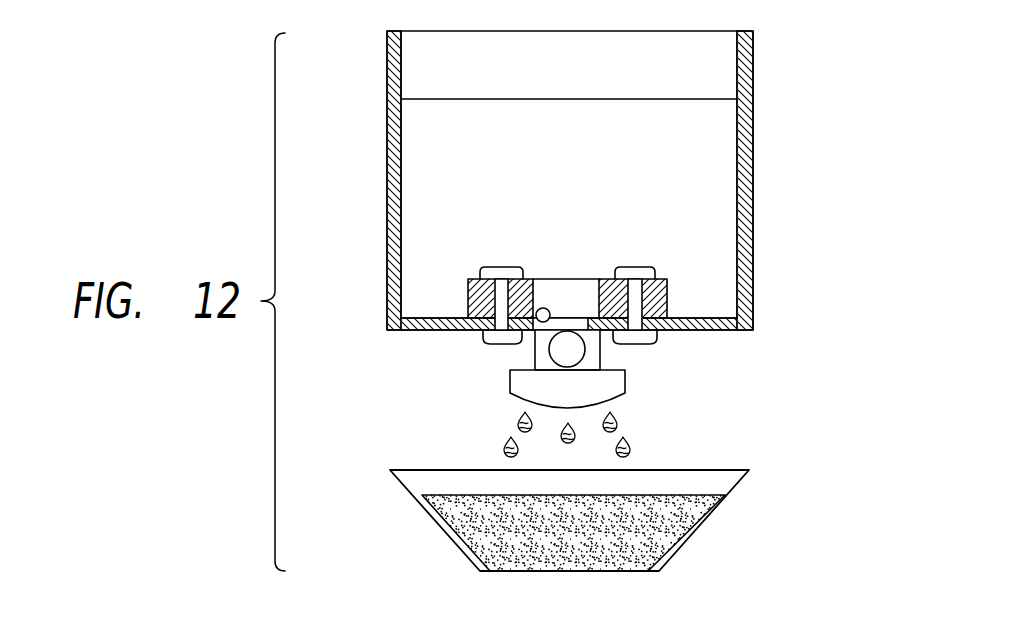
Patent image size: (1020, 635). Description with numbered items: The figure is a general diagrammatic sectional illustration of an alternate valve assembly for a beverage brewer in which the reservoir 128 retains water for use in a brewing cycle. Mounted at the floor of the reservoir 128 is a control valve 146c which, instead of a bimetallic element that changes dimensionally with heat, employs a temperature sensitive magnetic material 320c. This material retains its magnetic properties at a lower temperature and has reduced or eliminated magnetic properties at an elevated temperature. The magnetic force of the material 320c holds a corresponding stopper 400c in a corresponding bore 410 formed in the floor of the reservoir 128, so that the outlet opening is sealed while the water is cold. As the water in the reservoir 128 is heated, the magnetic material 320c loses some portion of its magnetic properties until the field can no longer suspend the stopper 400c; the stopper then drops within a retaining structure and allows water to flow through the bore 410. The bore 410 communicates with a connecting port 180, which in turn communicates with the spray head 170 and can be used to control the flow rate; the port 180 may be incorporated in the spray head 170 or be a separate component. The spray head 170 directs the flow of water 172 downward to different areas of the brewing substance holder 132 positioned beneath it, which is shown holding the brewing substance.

The reservoir 128 is at (753, 68).
The control valve 146c is at (462, 277).
The temperature sensitive magnetic material 320c is at (667, 293).
The bore 410 is at (538, 321).
The connecting port 180 is at (600, 350).
The stopper 400c is at (567, 349).
The spray head 170 is at (507, 390).
The flow of water 172 is at (632, 448).
The brewing substance holder 132 is at (433, 518).